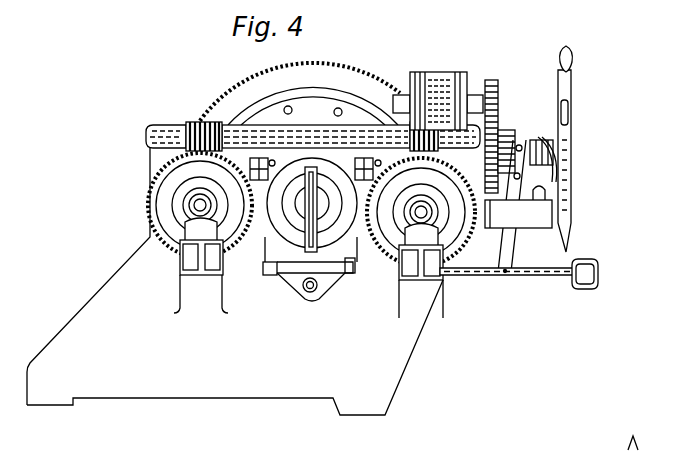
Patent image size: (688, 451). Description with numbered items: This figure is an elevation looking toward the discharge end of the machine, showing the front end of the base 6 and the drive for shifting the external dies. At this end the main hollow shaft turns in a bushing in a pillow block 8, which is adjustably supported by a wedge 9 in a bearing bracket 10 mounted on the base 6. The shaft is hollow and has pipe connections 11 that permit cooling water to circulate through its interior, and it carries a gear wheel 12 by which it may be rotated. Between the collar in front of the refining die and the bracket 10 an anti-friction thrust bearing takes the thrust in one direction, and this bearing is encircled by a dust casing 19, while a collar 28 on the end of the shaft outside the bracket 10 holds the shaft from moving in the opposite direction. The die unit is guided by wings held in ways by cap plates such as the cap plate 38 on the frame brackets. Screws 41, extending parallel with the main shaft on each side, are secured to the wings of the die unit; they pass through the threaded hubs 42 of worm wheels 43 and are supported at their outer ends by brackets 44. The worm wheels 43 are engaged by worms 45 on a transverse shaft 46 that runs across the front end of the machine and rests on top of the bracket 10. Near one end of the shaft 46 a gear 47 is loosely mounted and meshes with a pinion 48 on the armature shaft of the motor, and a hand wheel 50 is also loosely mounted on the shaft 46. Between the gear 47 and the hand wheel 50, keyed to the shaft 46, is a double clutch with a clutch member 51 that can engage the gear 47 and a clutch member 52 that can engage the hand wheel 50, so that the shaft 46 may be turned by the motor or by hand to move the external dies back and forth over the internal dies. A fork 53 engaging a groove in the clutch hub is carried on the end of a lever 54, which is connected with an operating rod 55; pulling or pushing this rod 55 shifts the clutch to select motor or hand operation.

The base 6 is at (235, 347).
The pillow block 8 is at (266, 276).
The wedge 9 is at (281, 276).
The bearing bracket 10 is at (302, 302).
The pipe connections 11 is at (350, 275).
The gear wheel 12 is at (355, 80).
The dust casing 19 is at (440, 72).
The collar 28 is at (266, 250).
The cap plate 38 is at (150, 161).
The screws 41 is at (200, 210).
The threaded hubs 42 is at (180, 201).
The worm wheels 43 is at (145, 183).
The brackets 44 is at (180, 229).
The worms 45 is at (194, 122).
The shaft 46 is at (250, 126).
The gear 47 is at (504, 130).
The pinion 48 is at (492, 80).
The hand wheel 50 is at (572, 84).
The clutch member 51 is at (532, 135).
The clutch member 52 is at (538, 140).
The fork 53 is at (572, 163).
The lever 54 is at (515, 257).
The operating rod 55 is at (560, 278).